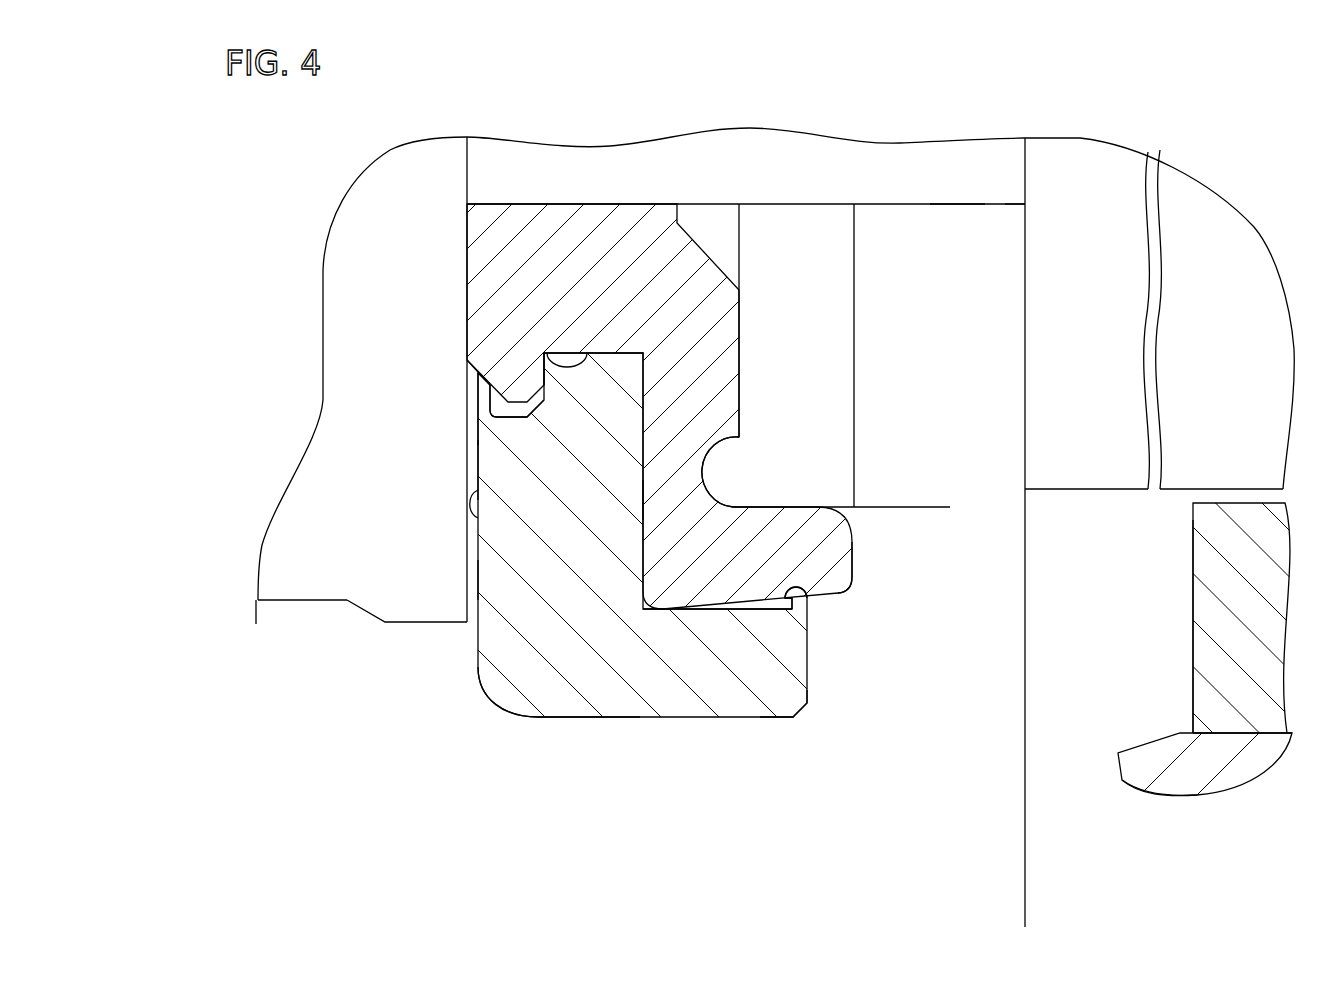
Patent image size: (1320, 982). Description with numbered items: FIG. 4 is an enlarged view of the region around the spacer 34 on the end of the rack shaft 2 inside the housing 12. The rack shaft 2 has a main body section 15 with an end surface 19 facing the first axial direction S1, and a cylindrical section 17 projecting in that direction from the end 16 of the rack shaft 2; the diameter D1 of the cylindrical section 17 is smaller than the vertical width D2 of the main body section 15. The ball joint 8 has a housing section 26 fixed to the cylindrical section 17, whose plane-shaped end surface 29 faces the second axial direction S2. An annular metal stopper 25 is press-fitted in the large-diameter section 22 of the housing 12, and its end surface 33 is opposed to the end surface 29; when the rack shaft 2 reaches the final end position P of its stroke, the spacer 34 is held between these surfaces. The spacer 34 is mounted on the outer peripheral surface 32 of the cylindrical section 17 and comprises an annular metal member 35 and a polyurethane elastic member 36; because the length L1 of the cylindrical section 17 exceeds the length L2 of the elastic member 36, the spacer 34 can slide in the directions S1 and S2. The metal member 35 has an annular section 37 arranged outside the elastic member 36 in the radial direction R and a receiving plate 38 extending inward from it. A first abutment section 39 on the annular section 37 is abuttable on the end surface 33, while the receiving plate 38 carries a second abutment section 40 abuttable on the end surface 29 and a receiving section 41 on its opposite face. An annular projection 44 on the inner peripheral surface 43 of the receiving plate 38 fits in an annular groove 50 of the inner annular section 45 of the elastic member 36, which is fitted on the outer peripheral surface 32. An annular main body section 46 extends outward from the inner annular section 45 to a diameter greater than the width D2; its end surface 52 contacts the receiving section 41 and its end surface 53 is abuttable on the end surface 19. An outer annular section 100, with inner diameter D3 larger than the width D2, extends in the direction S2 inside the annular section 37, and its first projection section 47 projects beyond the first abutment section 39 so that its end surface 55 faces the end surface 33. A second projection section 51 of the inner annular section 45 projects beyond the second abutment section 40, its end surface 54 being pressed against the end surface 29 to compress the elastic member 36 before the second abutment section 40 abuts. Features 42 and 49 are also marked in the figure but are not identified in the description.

The rack shaft 2 is at (1207, 177).
The ball joint 8 is at (385, 622).
The housing 12 is at (1137, 795).
The main body section 15 is at (1128, 140).
The end 16 is at (1047, 493).
The cylindrical section 17 is at (957, 207).
The end surface 19 is at (1025, 335).
The large-diameter section 22 is at (1150, 743).
The stopper 25 is at (1270, 733).
The housing section 26 is at (300, 603).
The end surface 29 is at (477, 517).
The outer peripheral surface 32 is at (1004, 208).
The end surface 33 is at (1193, 645).
The spacer 34 is at (515, 713).
The metal member 35 is at (585, 717).
The elastic member 36 is at (738, 604).
The annular section 37 is at (653, 708).
The receiving plate 38 is at (477, 468).
The first abutment section 39 is at (800, 712).
The second abutment section 40 is at (477, 440).
The receiving section 41 is at (650, 565).
The projection 42 is at (817, 600).
The inner peripheral surface 43 is at (487, 413).
The annular projection 44 is at (585, 362).
The inner annular section 45 is at (650, 235).
The annular main body section 46 is at (739, 313).
The first projection section 47 is at (848, 600).
The frame top surface 49 is at (490, 204).
The annular groove 50 is at (545, 365).
The second projection section 51 is at (470, 367).
The end surface 52 is at (640, 495).
The end surface 53 is at (739, 360).
The end surface 54 is at (467, 225).
The end surface 55 is at (853, 570).
The outer annular section 100 is at (770, 507).
The final end position P is at (1193, 558).
The diameter D1 is at (924, 204).
The vertical width D2 is at (1267, 176).
The inner diameter D3 is at (950, 399).
The length L1 is at (1024, 912).
The length L2 is at (467, 927).
The radial direction R is at (193, 557).
The first axial direction S1 is at (320, 815).
The second axial direction S2 is at (383, 846).